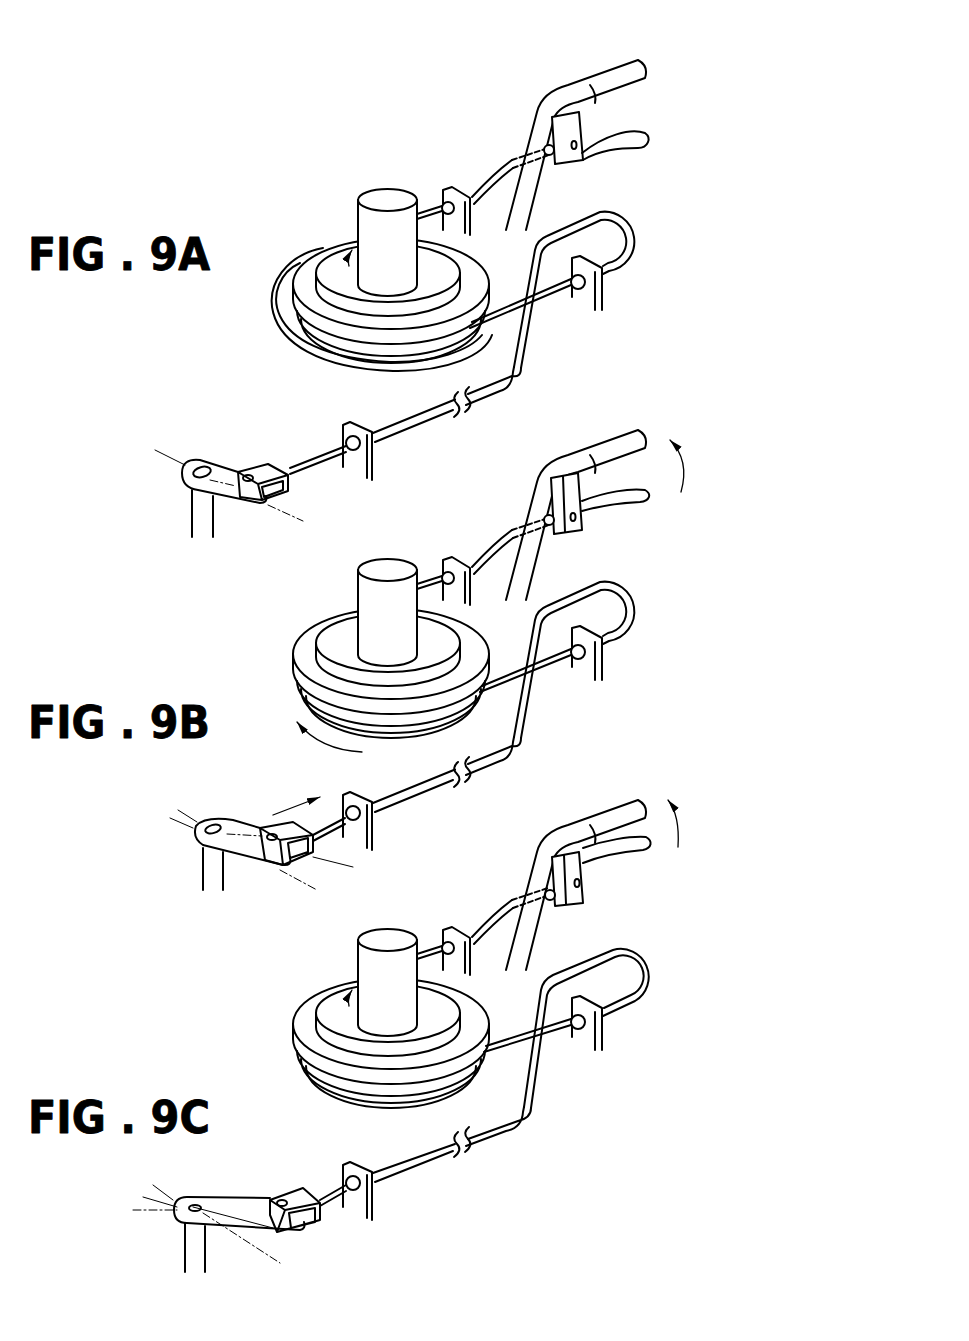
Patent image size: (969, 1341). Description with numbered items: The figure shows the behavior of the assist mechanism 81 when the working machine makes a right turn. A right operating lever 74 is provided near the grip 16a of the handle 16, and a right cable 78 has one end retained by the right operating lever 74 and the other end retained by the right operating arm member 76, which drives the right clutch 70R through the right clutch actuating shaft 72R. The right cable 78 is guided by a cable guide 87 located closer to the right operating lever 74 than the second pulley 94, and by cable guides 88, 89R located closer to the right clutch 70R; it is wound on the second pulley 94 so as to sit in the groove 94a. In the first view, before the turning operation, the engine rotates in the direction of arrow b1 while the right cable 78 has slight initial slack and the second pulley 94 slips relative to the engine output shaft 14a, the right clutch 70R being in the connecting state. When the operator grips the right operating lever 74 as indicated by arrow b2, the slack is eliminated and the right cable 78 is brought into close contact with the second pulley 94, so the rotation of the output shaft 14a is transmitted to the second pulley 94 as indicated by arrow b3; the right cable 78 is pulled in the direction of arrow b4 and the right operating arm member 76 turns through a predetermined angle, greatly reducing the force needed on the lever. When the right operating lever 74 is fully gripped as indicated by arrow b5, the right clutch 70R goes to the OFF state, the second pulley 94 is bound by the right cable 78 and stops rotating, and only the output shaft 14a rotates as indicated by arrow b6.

In FIG. 9A, the assist mechanism 81 is at (212, 134).
In FIG. 9B, the assist mechanism 81 is at (207, 645).
In FIG. 9C, the assist mechanism 81 is at (240, 1058).
In FIG. 9A, the handle 16 is at (543, 85).
In FIG. 9A, the grip 16a is at (613, 77).
In FIG. 9A, the right operating lever 74 is at (638, 127).
In FIG. 9B, the right operating lever 74 is at (620, 498).
In FIG. 9C, the right operating lever 74 is at (627, 857).
In FIG. 9A, the cable guide 87 is at (445, 184).
In FIG. 9A, the engine output shaft 14a is at (372, 223).
In FIG. 9B, the engine output shaft 14a is at (385, 583).
In FIG. 9C, the engine output shaft 14a is at (392, 947).
In FIG. 9A, the second pulley 94 is at (310, 267).
In FIG. 9B, the second pulley 94 is at (302, 655).
In FIG. 9C, the second pulley 94 is at (307, 1027).
In FIG. 9A, the right cable 78 is at (627, 217).
In FIG. 9B, the right cable 78 is at (627, 593).
In FIG. 9C, the right cable 78 is at (640, 952).
In FIG. 9A, the cable guide 88 is at (603, 288).
In FIG. 9A, the groove 94a is at (330, 337).
In FIG. 9A, the cable guide 89R is at (375, 450).
In FIG. 9A, the right operating arm member 76 is at (173, 475).
In FIG. 9B, the right operating arm member 76 is at (190, 845).
In FIG. 9C, the right operating arm member 76 is at (172, 1218).
In FIG. 9A, the right clutch actuating shaft 72R is at (188, 512).
In FIG. 9B, the right clutch actuating shaft 72R is at (200, 875).
In FIG. 9C, the right clutch actuating shaft 72R is at (180, 1260).
In FIG. 9A, the right clutch 70R is at (223, 530).
In FIG. 9B, the right clutch 70R is at (245, 873).
In FIG. 9C, the right clutch 70R is at (275, 1249).
In FIG. 9A, the arrow b1 is at (341, 277).
In FIG. 9B, the arrow b2 is at (696, 469).
In FIG. 9B, the arrow b3 is at (328, 746).
In FIG. 9B, the arrow b4 is at (286, 799).
In FIG. 9B, the arrow b5 is at (695, 824).
In FIG. 9C, the arrow b6 is at (346, 1014).